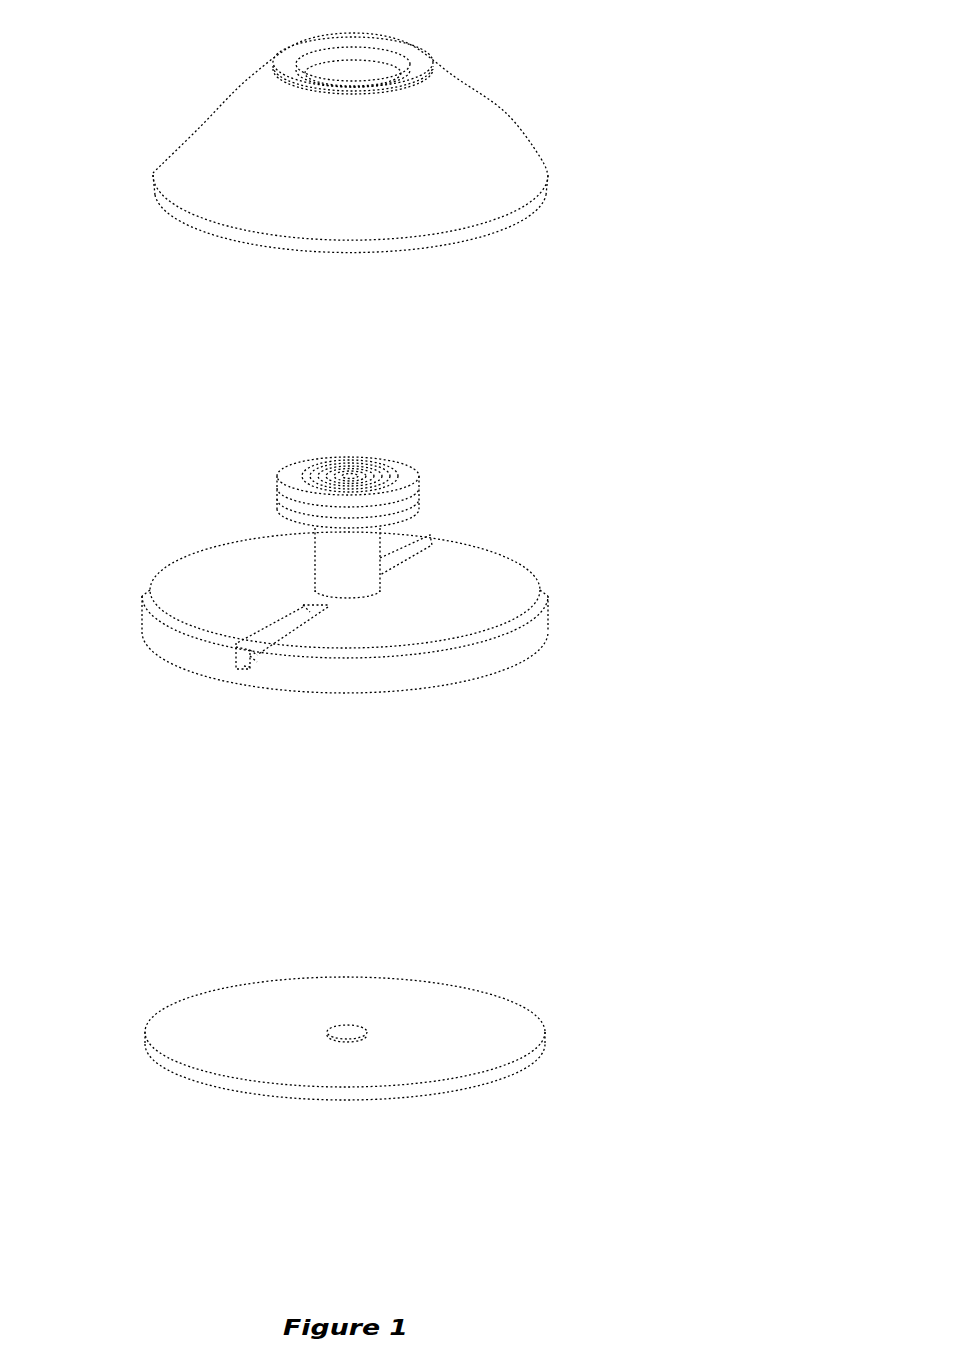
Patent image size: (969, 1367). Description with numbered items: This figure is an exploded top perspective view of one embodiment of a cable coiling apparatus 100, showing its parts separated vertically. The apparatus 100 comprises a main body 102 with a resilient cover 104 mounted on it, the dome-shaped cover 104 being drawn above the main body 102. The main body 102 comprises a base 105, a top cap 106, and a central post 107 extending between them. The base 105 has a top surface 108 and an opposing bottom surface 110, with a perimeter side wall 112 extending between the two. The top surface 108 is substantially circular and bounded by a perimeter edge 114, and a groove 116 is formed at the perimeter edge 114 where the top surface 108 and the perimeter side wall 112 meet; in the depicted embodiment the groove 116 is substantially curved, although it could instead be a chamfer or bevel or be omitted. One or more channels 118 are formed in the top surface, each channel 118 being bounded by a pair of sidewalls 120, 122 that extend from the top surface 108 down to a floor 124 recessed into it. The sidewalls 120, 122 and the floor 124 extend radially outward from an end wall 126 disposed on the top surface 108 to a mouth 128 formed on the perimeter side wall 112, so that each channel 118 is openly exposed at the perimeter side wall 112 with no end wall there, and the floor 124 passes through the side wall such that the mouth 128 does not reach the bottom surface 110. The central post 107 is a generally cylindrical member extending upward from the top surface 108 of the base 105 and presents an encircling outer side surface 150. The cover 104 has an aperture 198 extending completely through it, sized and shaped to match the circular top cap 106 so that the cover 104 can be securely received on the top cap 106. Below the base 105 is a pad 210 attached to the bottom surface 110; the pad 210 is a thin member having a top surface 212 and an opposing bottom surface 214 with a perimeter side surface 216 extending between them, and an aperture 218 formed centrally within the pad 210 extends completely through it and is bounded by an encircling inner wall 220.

The cable coiling apparatus 100 is at (752, 528).
The main body 102 is at (423, 601).
The resilient cover 104 is at (457, 235).
The base 105 is at (208, 549).
The top cap 106 is at (405, 478).
The central post 107 is at (365, 575).
The top surface 108 is at (233, 562).
The bottom surface 110 is at (507, 667).
The perimeter side wall 112 is at (155, 625).
The perimeter edge 114 is at (253, 537).
The groove 116 is at (168, 617).
The channel 118 is at (430, 540).
The sidewall 120 is at (240, 649).
The sidewall 122 is at (260, 661).
The floor 124 is at (253, 669).
The end wall 126 is at (310, 612).
The mouth 128 is at (237, 652).
The outer side surface 150 is at (333, 553).
The aperture 198 is at (347, 73).
The pad 210 is at (402, 817).
The top surface 212 is at (202, 997).
The bottom surface 214 is at (272, 1093).
The perimeter side surface 216 is at (155, 1053).
The aperture 218 is at (340, 1023).
The inner wall 220 is at (350, 1027).